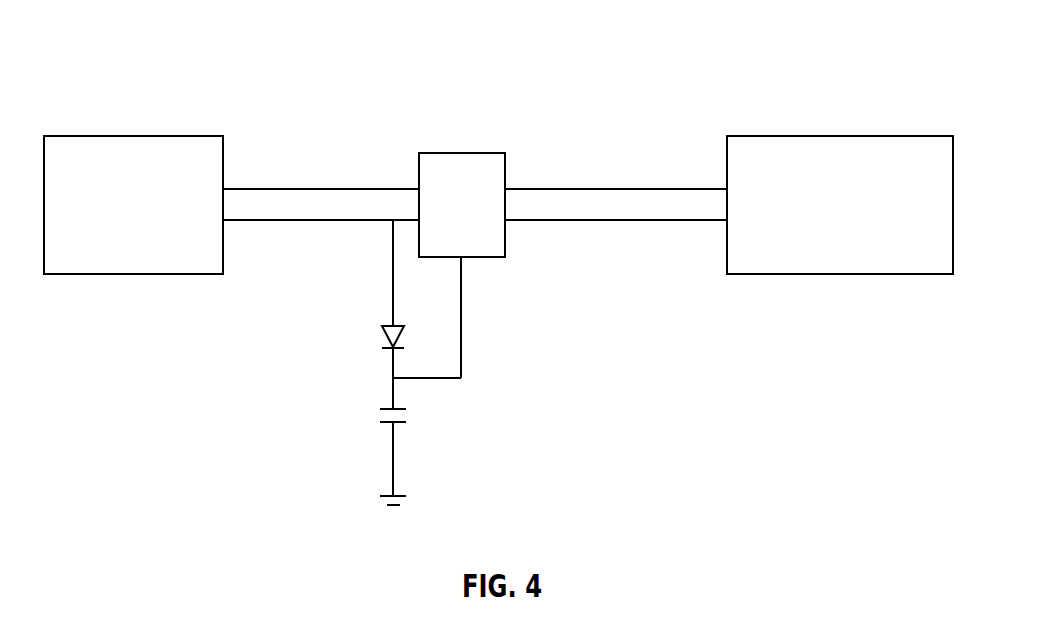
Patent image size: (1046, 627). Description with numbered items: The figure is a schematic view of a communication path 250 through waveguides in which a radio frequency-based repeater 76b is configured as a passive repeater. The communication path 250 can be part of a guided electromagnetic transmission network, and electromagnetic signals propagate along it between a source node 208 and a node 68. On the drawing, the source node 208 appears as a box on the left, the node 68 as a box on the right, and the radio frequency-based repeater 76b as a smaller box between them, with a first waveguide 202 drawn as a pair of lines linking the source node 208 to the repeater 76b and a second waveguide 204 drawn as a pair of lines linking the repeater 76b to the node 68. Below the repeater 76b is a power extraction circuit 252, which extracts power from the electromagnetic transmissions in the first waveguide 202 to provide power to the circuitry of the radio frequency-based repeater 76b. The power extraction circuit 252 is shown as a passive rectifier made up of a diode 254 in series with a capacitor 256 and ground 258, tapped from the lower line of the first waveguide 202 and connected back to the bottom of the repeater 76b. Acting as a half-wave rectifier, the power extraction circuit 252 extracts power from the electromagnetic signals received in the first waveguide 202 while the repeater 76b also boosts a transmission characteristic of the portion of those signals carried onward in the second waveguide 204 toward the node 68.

The communication path 250 is at (386, 89).
The source node 208 is at (155, 218).
The radio frequency-based repeater 76b is at (484, 218).
The node 68 is at (856, 218).
The first waveguide 202 is at (312, 221).
The second waveguide 204 is at (632, 221).
The power extraction circuit 252 is at (416, 378).
The diode 254 is at (385, 330).
The capacitor 256 is at (380, 418).
The ground 258 is at (387, 502).